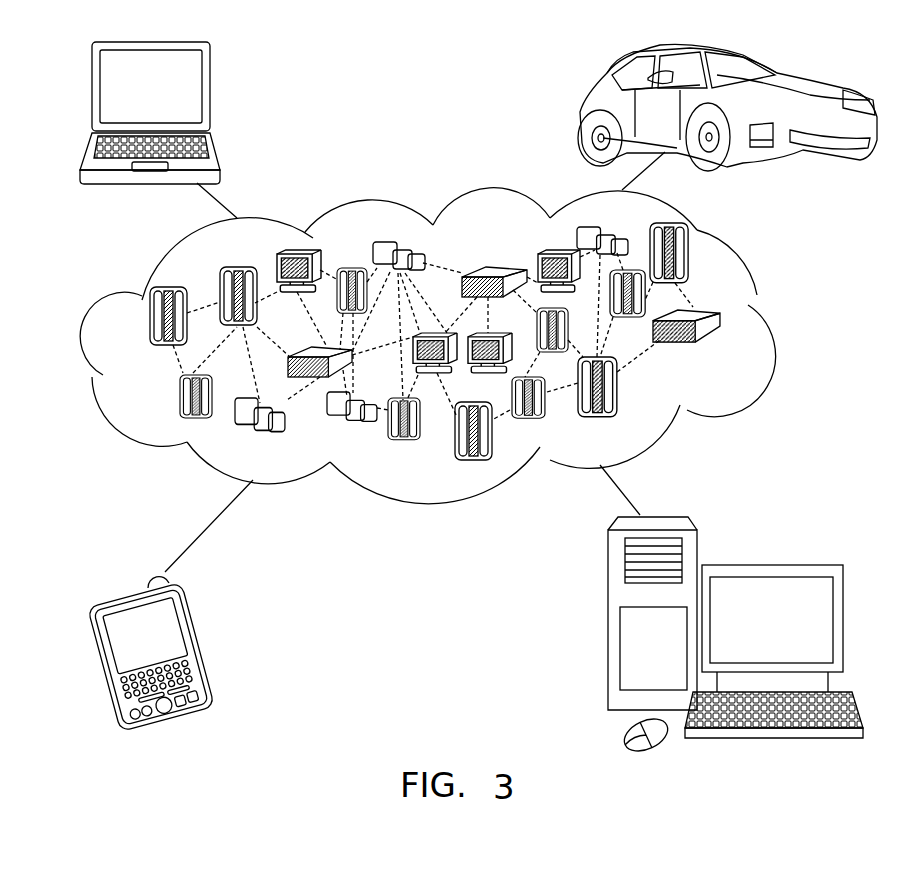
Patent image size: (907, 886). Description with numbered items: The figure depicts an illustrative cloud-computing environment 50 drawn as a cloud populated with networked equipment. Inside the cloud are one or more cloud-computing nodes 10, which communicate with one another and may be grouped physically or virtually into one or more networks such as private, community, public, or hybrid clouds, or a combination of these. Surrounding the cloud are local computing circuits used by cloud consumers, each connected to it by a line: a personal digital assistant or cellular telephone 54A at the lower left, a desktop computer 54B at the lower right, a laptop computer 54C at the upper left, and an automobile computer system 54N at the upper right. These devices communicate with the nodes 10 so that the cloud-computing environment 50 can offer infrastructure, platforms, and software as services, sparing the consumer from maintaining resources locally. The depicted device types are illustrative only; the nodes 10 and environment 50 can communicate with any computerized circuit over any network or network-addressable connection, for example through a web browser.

The cloud-computing node 10 is at (738, 358).
The cloud-computing environment 50 is at (772, 326).
The personal digital assistant (PDA) or cellular telephone 54A is at (202, 645).
The desktop computer 54B is at (768, 563).
The laptop computer 54C is at (210, 96).
The automobile computer system 54N is at (582, 110).